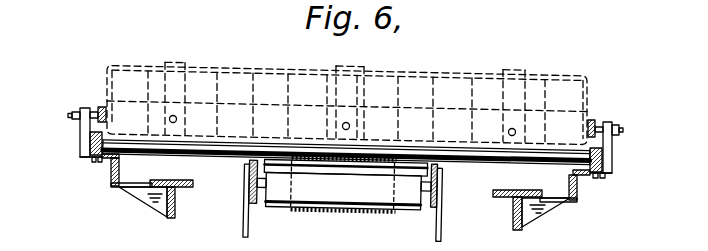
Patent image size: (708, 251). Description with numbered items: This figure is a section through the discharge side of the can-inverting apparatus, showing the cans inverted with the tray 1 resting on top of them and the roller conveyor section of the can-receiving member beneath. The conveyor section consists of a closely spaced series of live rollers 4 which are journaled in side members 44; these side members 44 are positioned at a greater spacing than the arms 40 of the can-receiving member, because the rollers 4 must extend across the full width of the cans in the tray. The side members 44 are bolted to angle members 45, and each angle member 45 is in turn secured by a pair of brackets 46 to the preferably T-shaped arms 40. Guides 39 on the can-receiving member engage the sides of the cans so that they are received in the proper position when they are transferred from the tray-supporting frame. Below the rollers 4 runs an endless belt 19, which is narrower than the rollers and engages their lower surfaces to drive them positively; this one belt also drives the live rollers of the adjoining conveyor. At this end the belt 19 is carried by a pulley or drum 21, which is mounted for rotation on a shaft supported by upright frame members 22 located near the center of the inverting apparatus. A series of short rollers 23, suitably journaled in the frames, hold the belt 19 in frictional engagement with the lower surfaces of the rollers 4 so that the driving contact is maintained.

The body 1 is at (375, 75).
The live rollers 4 is at (472, 162).
The endless belt 19 is at (337, 157).
The pulley or drum 21 is at (407, 208).
The upright frame members 22 is at (244, 226).
The short rollers 23 is at (282, 168).
The guides 39 is at (103, 107).
The arms 40 is at (166, 206).
The side members 44 is at (91, 147).
The angle members 45 is at (84, 160).
The brackets 46 is at (132, 188).